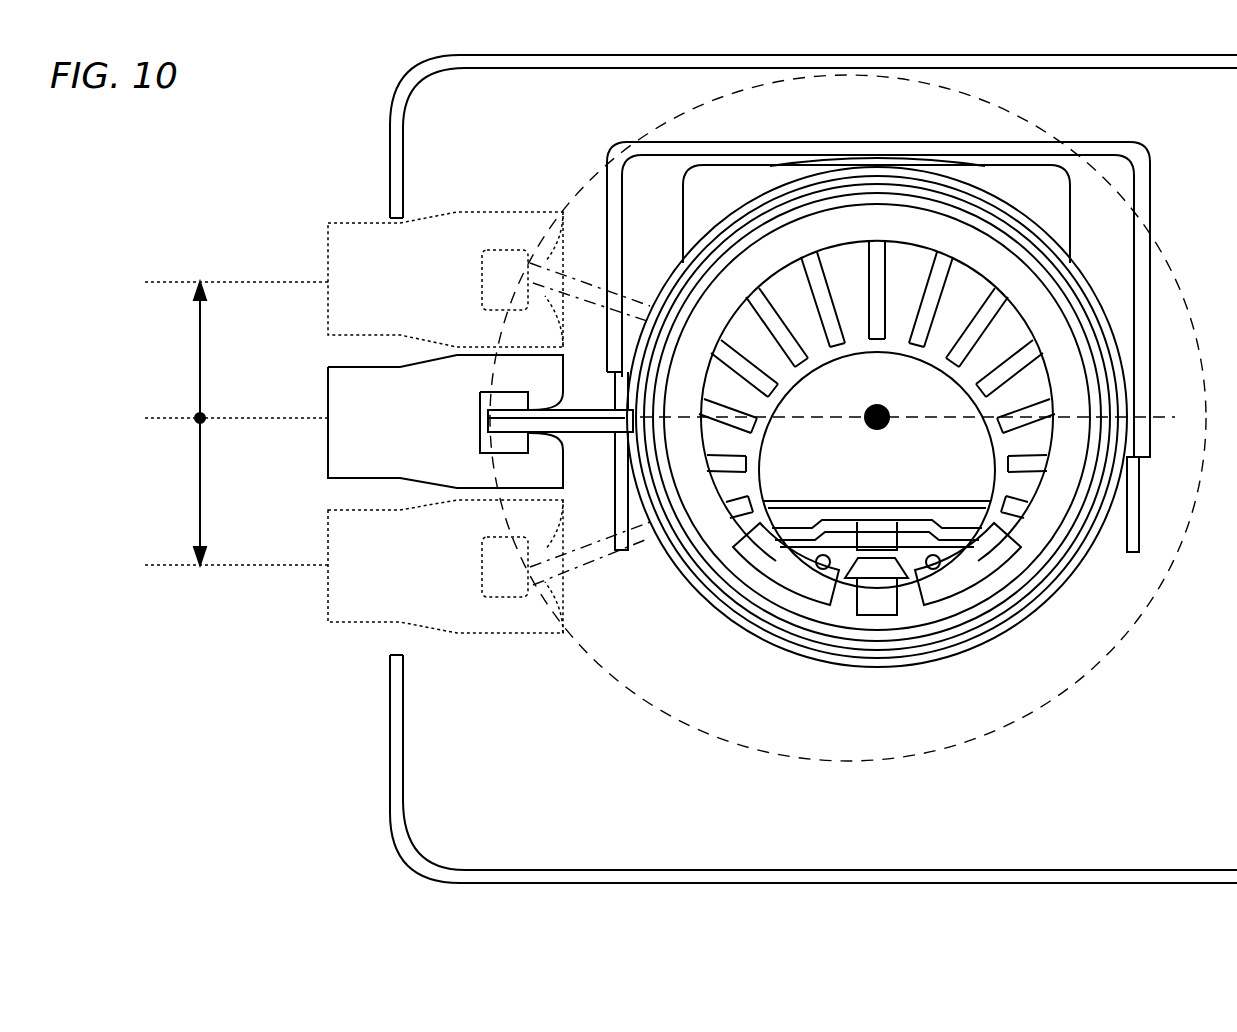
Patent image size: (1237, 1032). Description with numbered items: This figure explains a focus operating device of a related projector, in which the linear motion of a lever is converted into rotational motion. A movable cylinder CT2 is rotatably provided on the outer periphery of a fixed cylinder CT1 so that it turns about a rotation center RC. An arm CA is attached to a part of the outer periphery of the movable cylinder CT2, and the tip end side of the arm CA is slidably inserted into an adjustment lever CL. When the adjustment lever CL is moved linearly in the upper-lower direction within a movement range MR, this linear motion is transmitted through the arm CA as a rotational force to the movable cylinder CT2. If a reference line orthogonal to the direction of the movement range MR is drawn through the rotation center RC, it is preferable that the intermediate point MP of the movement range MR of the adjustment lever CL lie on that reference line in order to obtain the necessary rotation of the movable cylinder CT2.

The movement range MR is at (200, 352).
The intermediate point MP is at (196, 422).
The adjustment lever CL is at (328, 472).
The arm CA is at (643, 527).
The rotation center RC is at (877, 429).
The fixed cylinder CT1 is at (1018, 583).
The movable cylinder CT2 is at (1078, 540).